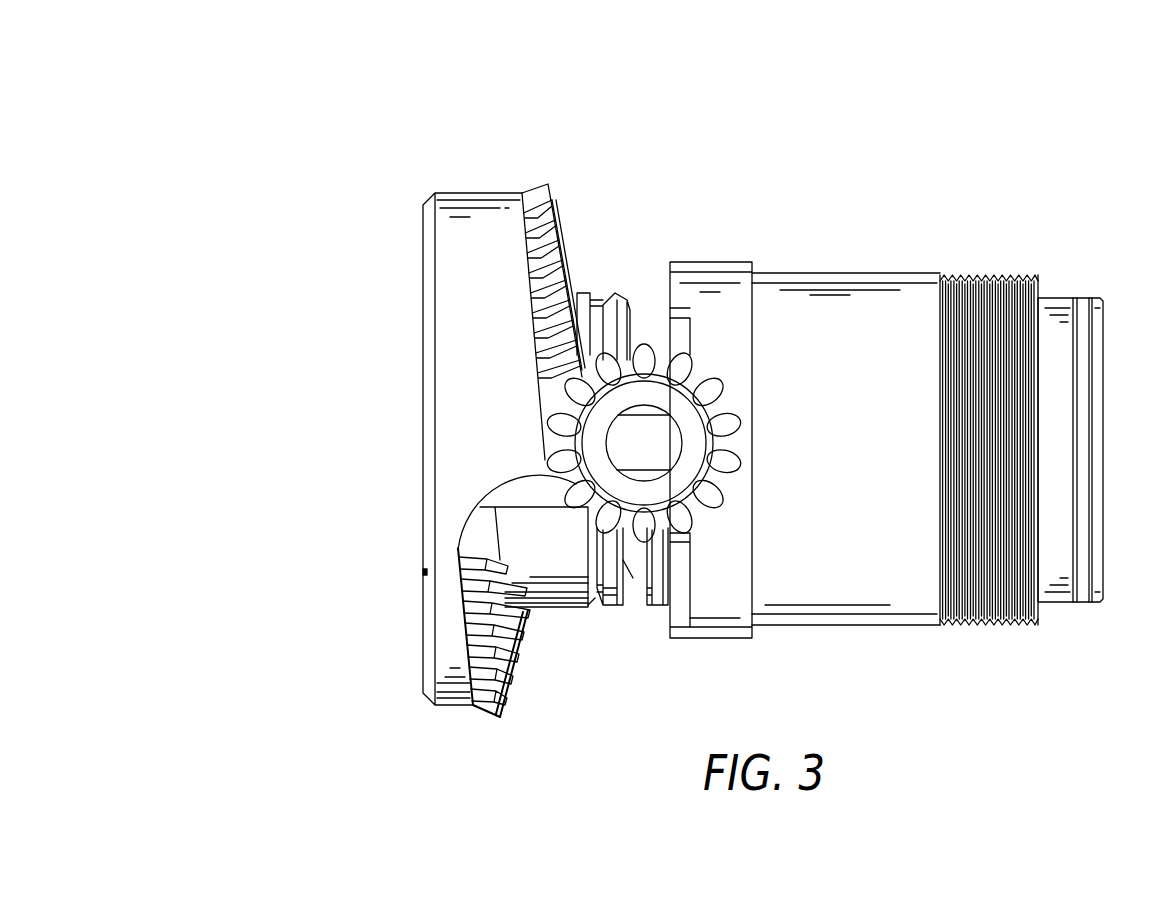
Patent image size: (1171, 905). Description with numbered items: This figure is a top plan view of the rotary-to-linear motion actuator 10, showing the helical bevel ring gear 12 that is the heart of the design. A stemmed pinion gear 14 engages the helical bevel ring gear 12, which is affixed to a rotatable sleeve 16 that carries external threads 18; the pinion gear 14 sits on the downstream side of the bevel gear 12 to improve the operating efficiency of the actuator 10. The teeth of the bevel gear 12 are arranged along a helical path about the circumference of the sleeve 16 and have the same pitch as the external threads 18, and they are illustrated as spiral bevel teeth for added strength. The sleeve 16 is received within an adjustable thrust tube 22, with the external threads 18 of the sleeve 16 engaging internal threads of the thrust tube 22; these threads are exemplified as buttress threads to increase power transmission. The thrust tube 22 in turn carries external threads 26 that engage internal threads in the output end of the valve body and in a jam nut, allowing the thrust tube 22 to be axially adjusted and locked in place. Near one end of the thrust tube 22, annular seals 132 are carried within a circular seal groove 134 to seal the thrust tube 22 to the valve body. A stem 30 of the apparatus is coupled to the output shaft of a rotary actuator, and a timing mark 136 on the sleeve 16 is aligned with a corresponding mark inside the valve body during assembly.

The rotary-to-linear motion actuator 10 is at (325, 160).
The helical bevel ring gear 12 is at (558, 217).
The stemmed pinion gear 14 is at (638, 362).
The rotatable sleeve 16 is at (428, 643).
The external threads 18 is at (632, 578).
The adjustable thrust tube 22 is at (871, 613).
The external threads 26 is at (992, 627).
The stem 30 is at (647, 443).
The annular seals 132 is at (1083, 298).
The circular seal groove 134 is at (1089, 298).
The timing mark 136 is at (424, 572).